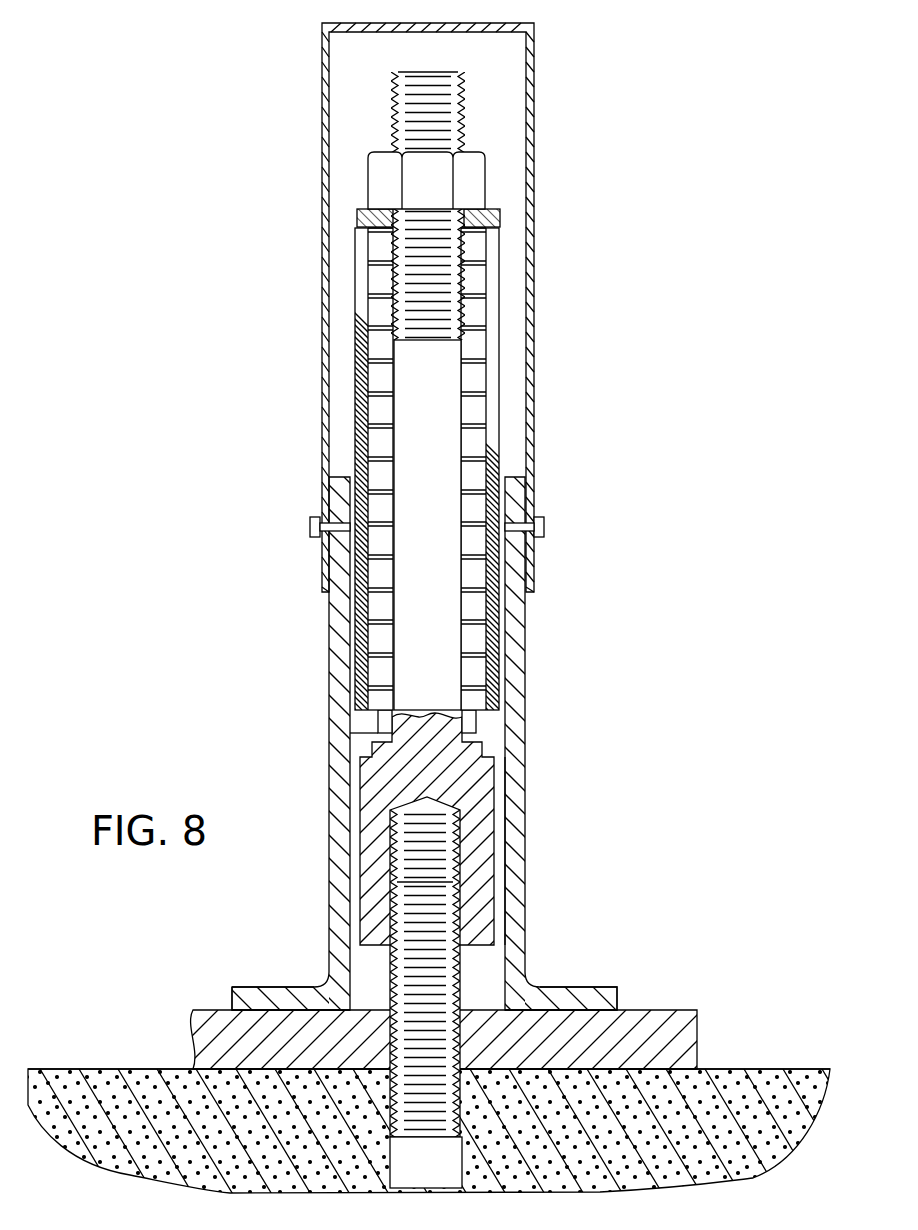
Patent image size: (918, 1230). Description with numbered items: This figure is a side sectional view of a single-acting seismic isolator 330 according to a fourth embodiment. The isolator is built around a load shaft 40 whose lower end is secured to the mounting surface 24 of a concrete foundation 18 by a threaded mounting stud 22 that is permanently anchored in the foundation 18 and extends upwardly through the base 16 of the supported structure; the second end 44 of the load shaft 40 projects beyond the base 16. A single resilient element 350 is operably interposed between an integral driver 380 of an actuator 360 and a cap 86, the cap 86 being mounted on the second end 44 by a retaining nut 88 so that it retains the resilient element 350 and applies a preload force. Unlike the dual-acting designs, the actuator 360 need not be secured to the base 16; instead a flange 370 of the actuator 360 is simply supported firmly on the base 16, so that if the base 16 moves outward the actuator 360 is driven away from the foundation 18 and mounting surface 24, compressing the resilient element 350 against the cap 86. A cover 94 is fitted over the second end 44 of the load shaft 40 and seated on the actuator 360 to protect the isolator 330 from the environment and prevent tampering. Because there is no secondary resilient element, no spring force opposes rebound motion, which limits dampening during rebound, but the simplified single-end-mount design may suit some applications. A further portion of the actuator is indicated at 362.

The base 16 is at (683, 1030).
The concrete foundation 18 is at (800, 1095).
The threaded mounting stud 22 is at (440, 975).
The mounting surface 24 is at (748, 1063).
The load shaft 40 is at (415, 420).
The second end 44 is at (470, 116).
The cap 86 is at (497, 210).
The retaining nut 88 is at (382, 167).
The cover 94 is at (322, 172).
The single-acting seismic isolator 330 is at (459, 605).
The resilient element 350 is at (497, 427).
The actuator 360 is at (560, 765).
The bore of inner tube 362 is at (520, 852).
The flange 370 is at (277, 995).
The integral driver 380 is at (363, 722).